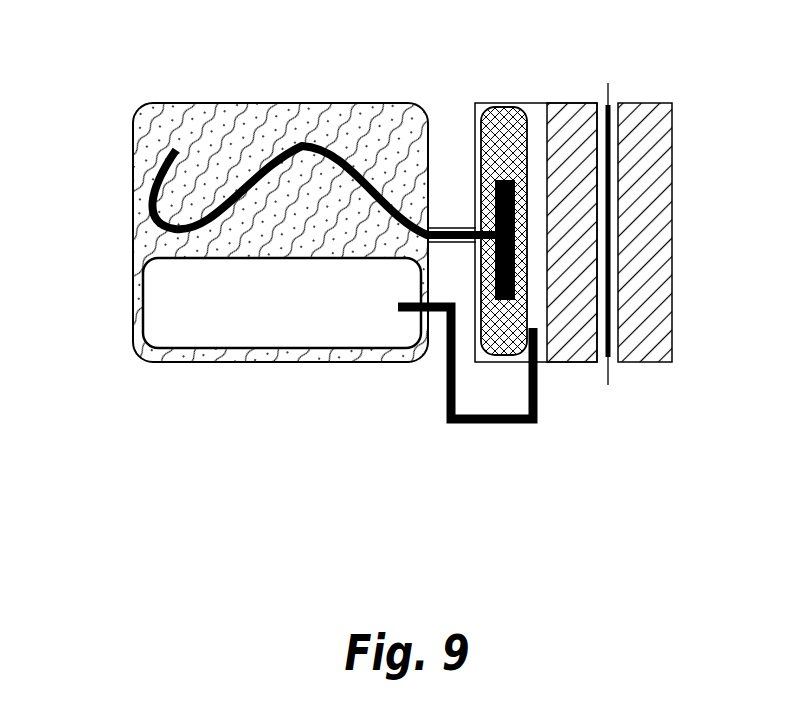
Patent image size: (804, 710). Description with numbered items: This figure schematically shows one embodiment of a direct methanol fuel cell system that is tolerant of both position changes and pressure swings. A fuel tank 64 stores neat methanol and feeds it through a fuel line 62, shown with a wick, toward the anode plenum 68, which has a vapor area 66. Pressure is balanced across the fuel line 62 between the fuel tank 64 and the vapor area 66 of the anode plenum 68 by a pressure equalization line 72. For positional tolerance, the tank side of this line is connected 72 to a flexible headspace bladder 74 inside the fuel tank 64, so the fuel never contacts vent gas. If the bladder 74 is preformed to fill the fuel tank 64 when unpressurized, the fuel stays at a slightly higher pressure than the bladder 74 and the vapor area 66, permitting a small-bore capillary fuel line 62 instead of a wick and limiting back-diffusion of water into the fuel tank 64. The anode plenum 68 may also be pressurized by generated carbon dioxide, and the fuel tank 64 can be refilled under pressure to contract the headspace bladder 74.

The fuel line 62 is at (152, 166).
The fuel tank 64 is at (251, 112).
The vapor area 66 is at (510, 261).
The anode plenum 68 is at (523, 358).
The pressure equalization line 72 is at (534, 425).
The flexible headspace bladder 74 is at (190, 333).